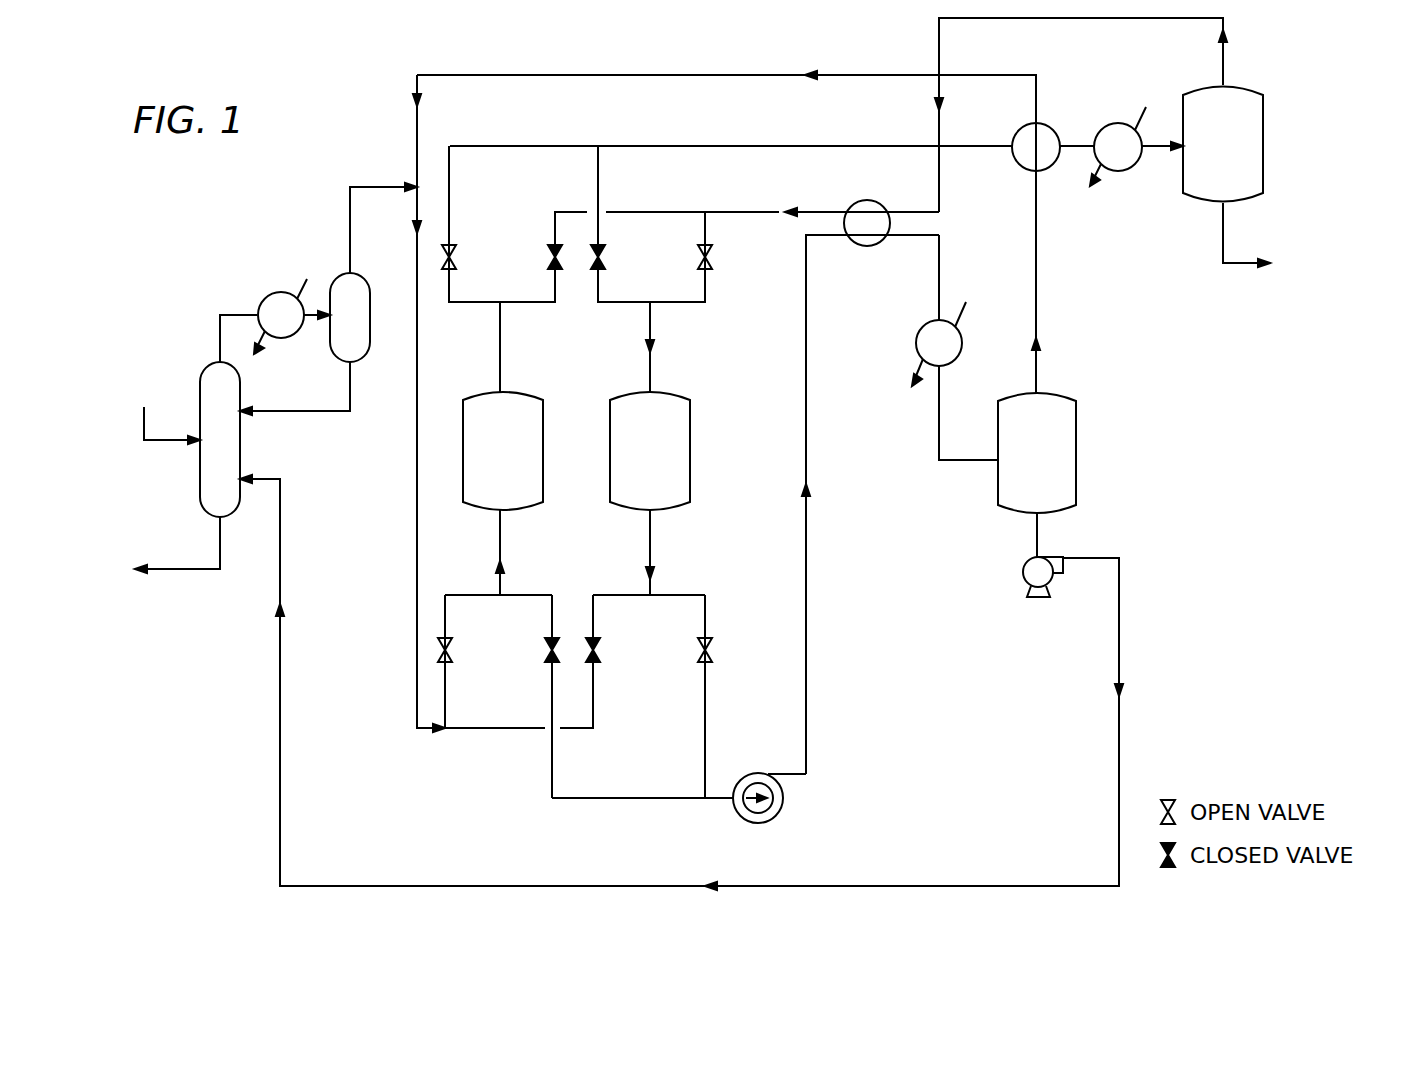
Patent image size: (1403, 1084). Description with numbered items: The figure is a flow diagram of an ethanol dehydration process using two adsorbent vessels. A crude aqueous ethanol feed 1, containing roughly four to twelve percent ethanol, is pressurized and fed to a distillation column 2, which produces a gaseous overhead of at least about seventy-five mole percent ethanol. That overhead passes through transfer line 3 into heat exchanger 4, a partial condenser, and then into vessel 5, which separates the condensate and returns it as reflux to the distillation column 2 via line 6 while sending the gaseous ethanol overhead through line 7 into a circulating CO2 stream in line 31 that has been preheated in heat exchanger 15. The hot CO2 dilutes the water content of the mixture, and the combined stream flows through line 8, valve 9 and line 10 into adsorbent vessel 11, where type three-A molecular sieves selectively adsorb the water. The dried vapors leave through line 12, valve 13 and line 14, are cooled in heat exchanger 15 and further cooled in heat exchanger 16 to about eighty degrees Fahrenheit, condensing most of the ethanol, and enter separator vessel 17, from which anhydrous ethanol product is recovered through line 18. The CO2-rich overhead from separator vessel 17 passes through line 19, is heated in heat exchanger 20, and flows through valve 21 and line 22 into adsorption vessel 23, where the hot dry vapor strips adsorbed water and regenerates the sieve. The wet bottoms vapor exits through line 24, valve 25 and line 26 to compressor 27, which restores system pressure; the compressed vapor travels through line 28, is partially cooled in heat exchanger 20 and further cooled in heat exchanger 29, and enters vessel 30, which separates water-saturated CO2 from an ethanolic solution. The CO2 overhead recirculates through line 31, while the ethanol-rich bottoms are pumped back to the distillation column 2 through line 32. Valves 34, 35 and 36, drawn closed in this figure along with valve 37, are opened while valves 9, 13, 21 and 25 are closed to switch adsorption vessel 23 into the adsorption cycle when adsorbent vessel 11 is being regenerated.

The crude aqueous ethanol feed 1 is at (157, 444).
The distillation column 2 is at (229, 454).
The transfer line 3 is at (243, 314).
The heat exchanger 4 is at (278, 292).
The vessel 5 is at (359, 330).
The line 6 is at (351, 402).
The line 7 is at (372, 187).
The line 8 is at (417, 517).
The valve 9 is at (452, 654).
The line 10 is at (503, 551).
The adsorbent vessel 11 is at (518, 461).
The line 12 is at (500, 350).
The valve 13 is at (456, 261).
The line 14 is at (760, 146).
The heat exchanger 15 is at (1020, 170).
The heat exchanger 16 is at (1106, 126).
The separator vessel 17 is at (1238, 159).
The line 18 is at (1227, 268).
The line 19 is at (1223, 42).
The heat exchanger 20 is at (847, 208).
The valve 21 is at (712, 263).
The line 22 is at (653, 362).
The adsorption vessel 23 is at (665, 461).
The line 24 is at (653, 545).
The valve 25 is at (712, 656).
The line 26 is at (716, 801).
The compressor 27 is at (783, 805).
The line 28 is at (808, 628).
The heat exchanger 29 is at (915, 340).
The vessel 30 is at (1052, 469).
The line 31 is at (417, 125).
The line 32 is at (1121, 612).
The valve 34 is at (545, 652).
The valve 35 is at (548, 259).
The valve 36 is at (605, 262).
The closed valve 37 is at (600, 654).